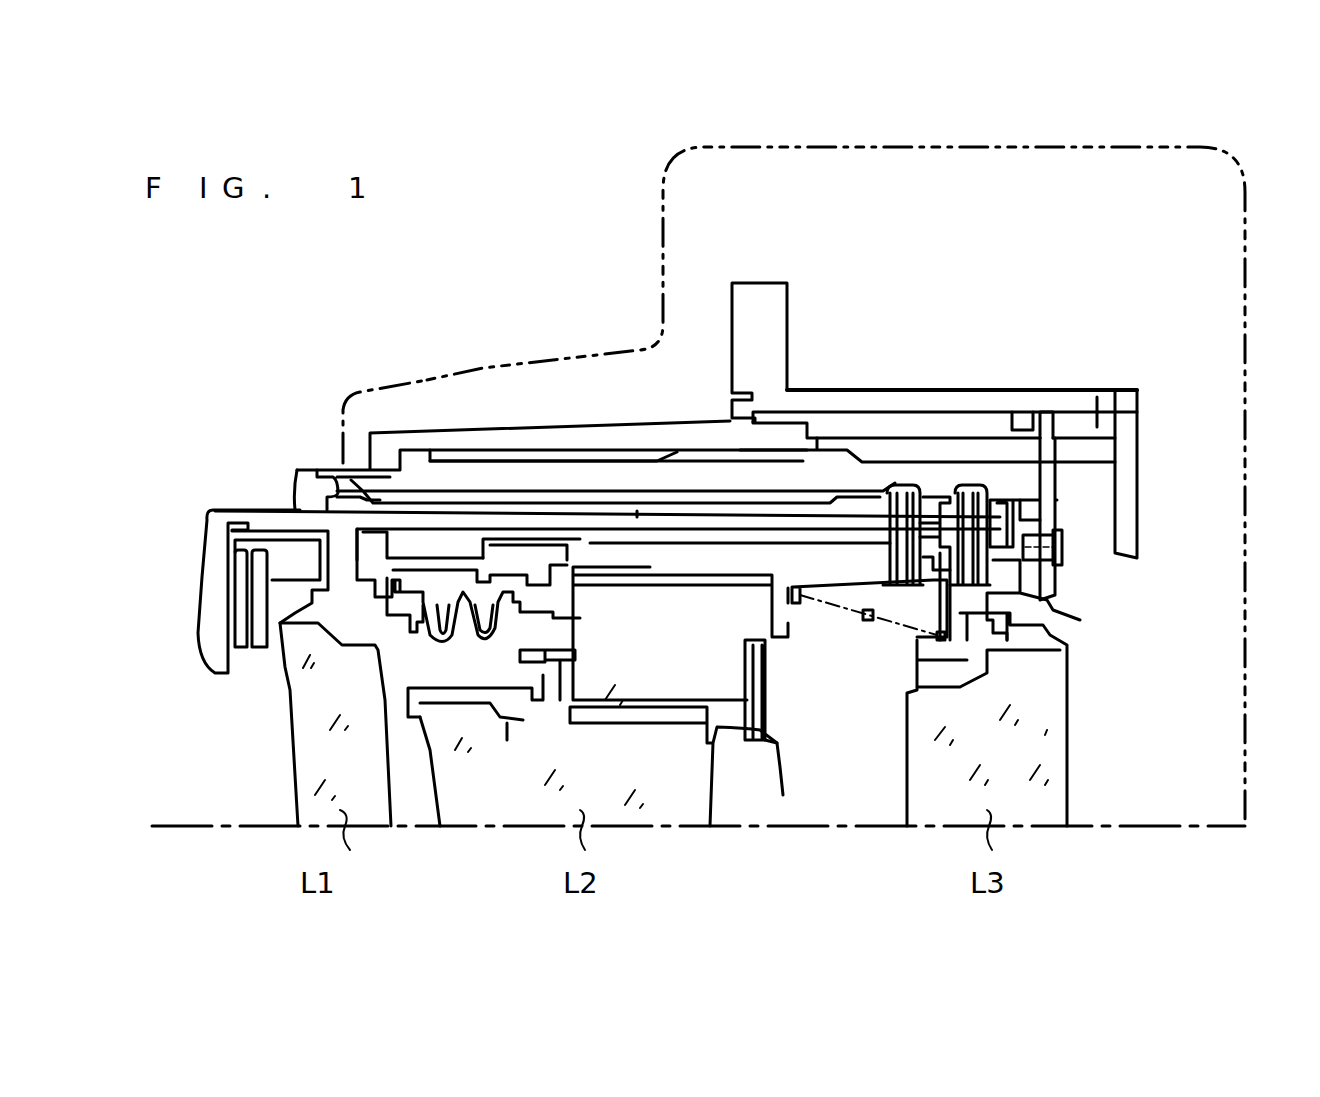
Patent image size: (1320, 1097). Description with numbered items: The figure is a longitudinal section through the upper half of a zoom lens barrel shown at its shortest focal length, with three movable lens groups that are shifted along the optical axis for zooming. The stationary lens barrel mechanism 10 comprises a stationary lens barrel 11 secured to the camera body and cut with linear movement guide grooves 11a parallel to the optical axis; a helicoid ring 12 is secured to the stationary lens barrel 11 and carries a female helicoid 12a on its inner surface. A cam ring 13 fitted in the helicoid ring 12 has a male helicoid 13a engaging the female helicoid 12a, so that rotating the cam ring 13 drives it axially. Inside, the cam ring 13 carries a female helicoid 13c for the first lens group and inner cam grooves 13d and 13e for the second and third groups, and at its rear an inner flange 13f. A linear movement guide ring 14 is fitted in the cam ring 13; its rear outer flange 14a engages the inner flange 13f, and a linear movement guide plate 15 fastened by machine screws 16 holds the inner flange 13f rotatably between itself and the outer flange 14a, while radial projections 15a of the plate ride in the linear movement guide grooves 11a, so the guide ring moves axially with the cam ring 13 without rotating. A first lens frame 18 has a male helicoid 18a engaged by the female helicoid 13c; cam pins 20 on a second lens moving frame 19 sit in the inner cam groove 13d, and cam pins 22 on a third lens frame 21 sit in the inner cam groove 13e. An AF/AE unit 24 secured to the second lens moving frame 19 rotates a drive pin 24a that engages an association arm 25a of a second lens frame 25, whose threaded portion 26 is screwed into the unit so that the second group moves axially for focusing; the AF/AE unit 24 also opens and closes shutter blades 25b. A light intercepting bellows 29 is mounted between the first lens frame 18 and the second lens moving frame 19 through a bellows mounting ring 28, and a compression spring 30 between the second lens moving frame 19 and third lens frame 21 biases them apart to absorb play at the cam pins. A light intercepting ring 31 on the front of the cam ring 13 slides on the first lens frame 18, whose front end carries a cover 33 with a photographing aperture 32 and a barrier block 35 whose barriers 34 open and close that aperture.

The stationary lens barrel mechanism 10 is at (1062, 262).
The stationary lens barrel 11 is at (1127, 480).
The linear movement guide grooves 11a is at (1097, 405).
The helicoid ring 12 is at (563, 437).
The female helicoid 12a is at (502, 463).
The cam ring 13 is at (363, 463).
The male helicoid 13a is at (835, 457).
The female helicoid 13c is at (437, 463).
The inner cam groove 13d is at (935, 483).
The inner cam groove 13e is at (988, 475).
The inner flange 13f is at (1017, 510).
The linear movement guide ring 14 is at (1057, 593).
The outer flange 14a is at (1013, 480).
The linear movement guide plate 15 is at (1057, 528).
The radial projections 15a is at (1040, 430).
The machine screws 16 is at (1060, 547).
The first lens frame 18 is at (343, 615).
The male helicoid 18a is at (845, 495).
The second lens moving frame 19 is at (712, 567).
The cam pins 20 is at (825, 512).
The third lens frame 21 is at (1027, 597).
The cam pins 22 is at (930, 520).
The AF/AE unit 24 is at (725, 667).
The drive pin 24a is at (590, 660).
The second lens frame 25 is at (738, 748).
The association arm 25a is at (530, 660).
The shutter blades 25b is at (777, 743).
The threaded portion 26 is at (570, 733).
The bellows mounting ring 28 is at (537, 602).
The light intercepting bellows 29 is at (443, 647).
The compression spring 30 is at (893, 612).
The light intercepting ring 31 is at (293, 467).
The photographing aperture 32 is at (215, 672).
The cover 33 is at (212, 597).
The barriers 34 is at (262, 570).
The barrier block 35 is at (262, 690).